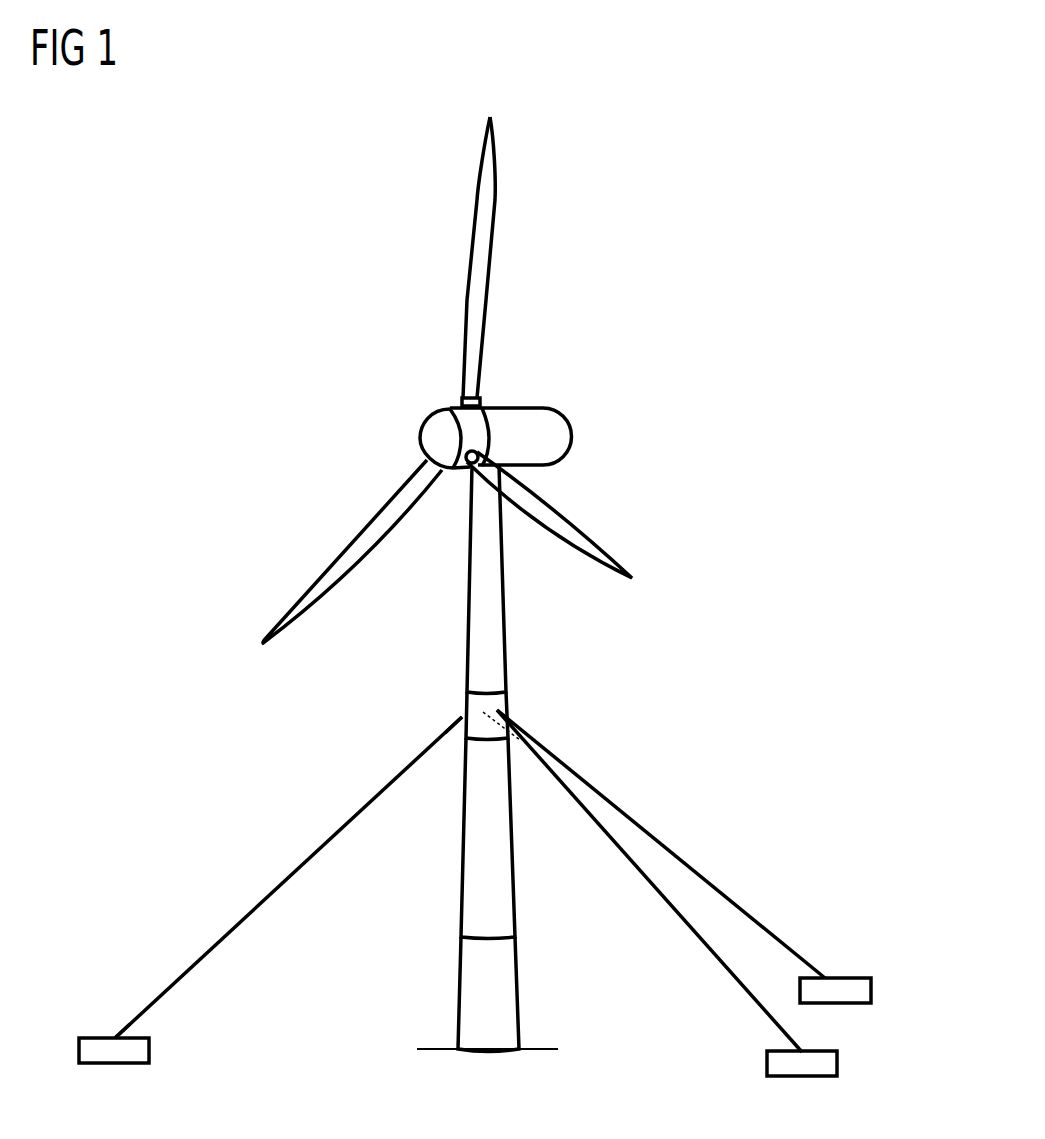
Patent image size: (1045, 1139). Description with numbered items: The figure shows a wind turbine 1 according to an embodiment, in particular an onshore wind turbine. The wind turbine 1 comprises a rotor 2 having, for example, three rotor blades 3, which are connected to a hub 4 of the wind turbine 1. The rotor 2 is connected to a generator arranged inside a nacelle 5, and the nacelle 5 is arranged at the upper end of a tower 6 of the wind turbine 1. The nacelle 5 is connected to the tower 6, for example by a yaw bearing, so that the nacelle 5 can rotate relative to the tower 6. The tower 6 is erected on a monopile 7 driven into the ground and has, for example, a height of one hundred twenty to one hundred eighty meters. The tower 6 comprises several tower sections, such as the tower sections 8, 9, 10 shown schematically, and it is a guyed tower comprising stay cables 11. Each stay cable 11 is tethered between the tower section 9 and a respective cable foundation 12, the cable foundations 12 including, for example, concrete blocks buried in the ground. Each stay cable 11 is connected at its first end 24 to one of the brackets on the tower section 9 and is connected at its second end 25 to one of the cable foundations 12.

The wind turbine 1 is at (627, 276).
The rotor 2 is at (390, 370).
The rotor blade 3 is at (485, 242).
The hub 4 is at (432, 438).
The nacelle 5 is at (558, 433).
The tower 6 is at (543, 702).
The monopile 7 is at (518, 980).
The tower section 8 is at (515, 857).
The tower section 9 is at (512, 702).
The tower section 10 is at (508, 620).
The stay cable 11 is at (257, 910).
The cable foundation 12 is at (149, 1047).
The first end 24 is at (462, 717).
The second end 25 is at (115, 1035).